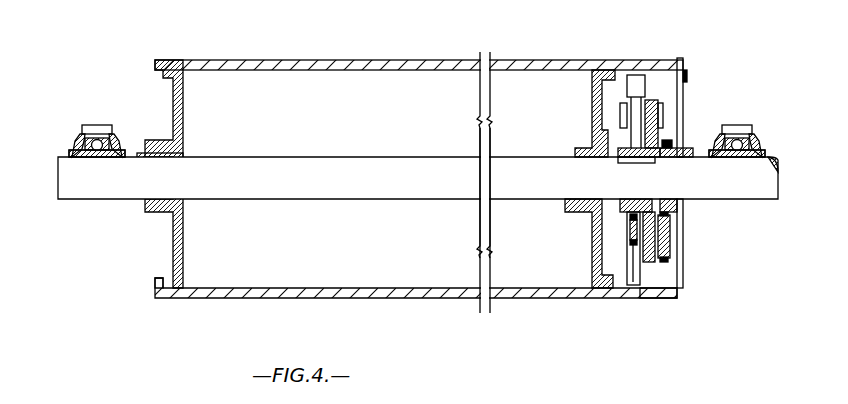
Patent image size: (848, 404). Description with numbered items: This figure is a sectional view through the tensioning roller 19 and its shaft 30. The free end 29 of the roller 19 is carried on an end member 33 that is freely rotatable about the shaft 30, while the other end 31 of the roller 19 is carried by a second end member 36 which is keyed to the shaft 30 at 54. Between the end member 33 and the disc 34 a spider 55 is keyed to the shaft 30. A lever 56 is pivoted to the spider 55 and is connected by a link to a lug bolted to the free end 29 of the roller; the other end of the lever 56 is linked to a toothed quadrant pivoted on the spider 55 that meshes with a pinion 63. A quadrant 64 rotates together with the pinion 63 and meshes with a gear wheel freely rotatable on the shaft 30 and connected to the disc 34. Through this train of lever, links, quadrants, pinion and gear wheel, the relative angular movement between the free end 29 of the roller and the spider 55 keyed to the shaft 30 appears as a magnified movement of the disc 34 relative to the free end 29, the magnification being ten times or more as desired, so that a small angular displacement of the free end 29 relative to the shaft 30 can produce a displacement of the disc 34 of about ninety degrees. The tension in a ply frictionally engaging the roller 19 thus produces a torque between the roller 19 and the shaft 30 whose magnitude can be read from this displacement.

The tensioning roller 19 is at (526, 66).
The free end of the roller 29 is at (667, 299).
The shaft 30 is at (382, 186).
The other end of the roller 31 is at (166, 298).
The end member 33 is at (597, 263).
The disc 34 is at (680, 258).
The second end member 36 is at (179, 255).
The keying location 54 is at (186, 156).
The spider 55 is at (655, 131).
The lever 56 is at (636, 92).
The pinion 63 is at (628, 229).
The quadrant 64 is at (669, 242).